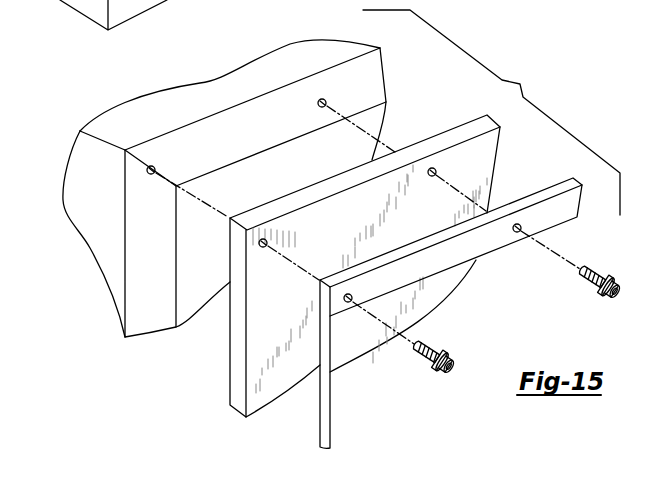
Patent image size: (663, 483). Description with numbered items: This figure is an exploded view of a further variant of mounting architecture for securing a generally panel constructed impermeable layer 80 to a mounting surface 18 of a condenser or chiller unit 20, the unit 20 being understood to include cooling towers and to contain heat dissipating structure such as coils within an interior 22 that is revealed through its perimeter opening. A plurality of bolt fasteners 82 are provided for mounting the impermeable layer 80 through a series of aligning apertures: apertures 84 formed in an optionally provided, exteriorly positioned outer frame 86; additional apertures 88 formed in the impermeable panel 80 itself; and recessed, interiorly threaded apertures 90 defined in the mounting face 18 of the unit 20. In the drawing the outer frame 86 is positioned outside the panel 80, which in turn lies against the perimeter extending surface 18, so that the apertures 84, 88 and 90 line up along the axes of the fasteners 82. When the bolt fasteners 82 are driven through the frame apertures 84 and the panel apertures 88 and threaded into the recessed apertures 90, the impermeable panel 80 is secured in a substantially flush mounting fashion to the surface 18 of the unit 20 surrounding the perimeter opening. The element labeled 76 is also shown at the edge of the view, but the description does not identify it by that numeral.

The perimeter extending surface 18 is at (373, 77).
The condenser or chiller unit 20 is at (95, 230).
The interior 22 is at (372, 123).
The bracket 76 is at (147, 0).
The impermeable layer 80 is at (484, 158).
The bolt fasteners 82 is at (455, 372).
The apertures 84 is at (349, 304).
The outer frame 86 is at (570, 208).
The apertures 88 is at (265, 248).
The recessed apertures 90 is at (155, 175).